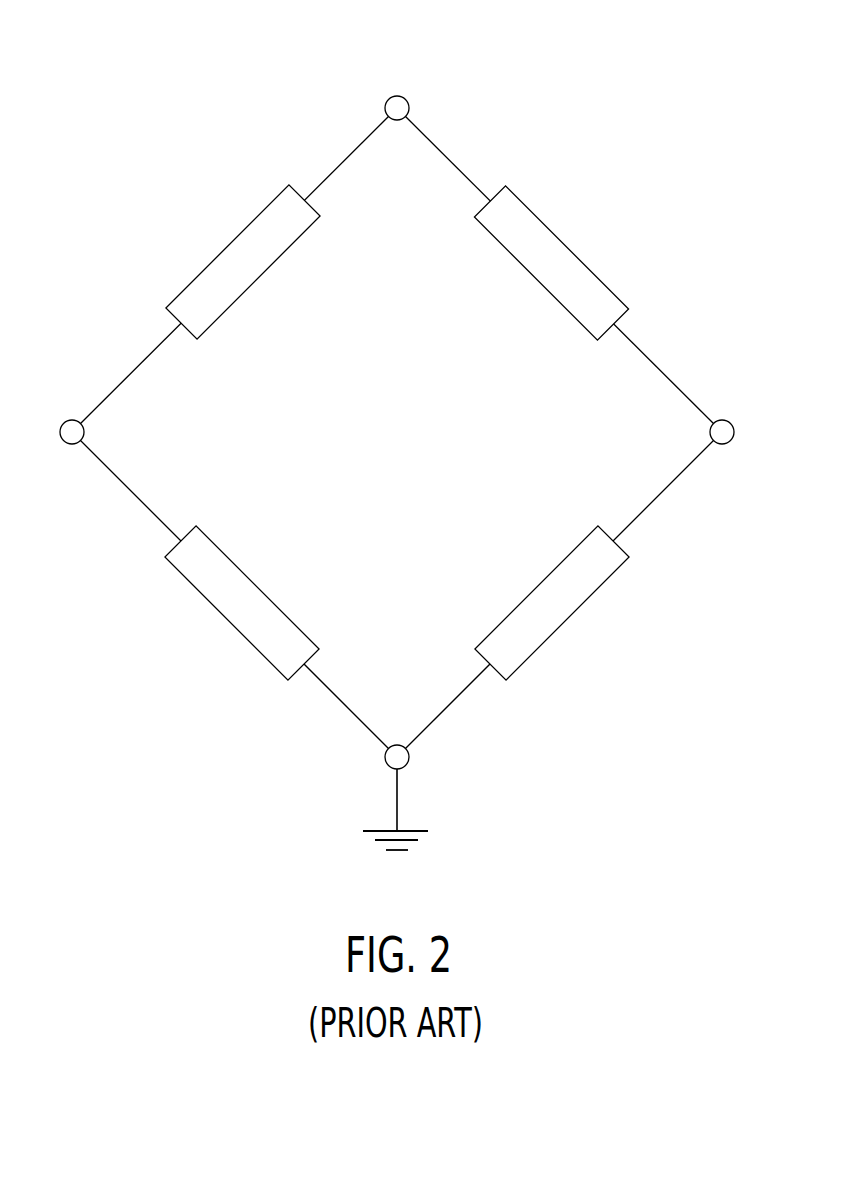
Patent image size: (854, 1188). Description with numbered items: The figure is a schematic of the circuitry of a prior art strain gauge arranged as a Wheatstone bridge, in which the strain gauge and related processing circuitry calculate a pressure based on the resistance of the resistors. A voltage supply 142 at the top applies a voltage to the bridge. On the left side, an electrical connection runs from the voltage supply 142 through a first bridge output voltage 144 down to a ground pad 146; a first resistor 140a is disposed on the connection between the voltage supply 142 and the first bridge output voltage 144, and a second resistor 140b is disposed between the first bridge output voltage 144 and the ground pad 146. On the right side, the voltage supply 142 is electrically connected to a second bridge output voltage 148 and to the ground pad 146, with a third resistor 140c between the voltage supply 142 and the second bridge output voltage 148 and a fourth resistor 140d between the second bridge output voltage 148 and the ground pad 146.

The first resistor 140a is at (215, 258).
The second resistor 140b is at (215, 610).
The third resistor 140c is at (585, 265).
The fourth resistor 140d is at (577, 610).
The voltage supply 142 is at (400, 97).
The first bridge output voltage 144 is at (67, 421).
The ground pad 146 is at (408, 762).
The second bridge output voltage 148 is at (726, 421).